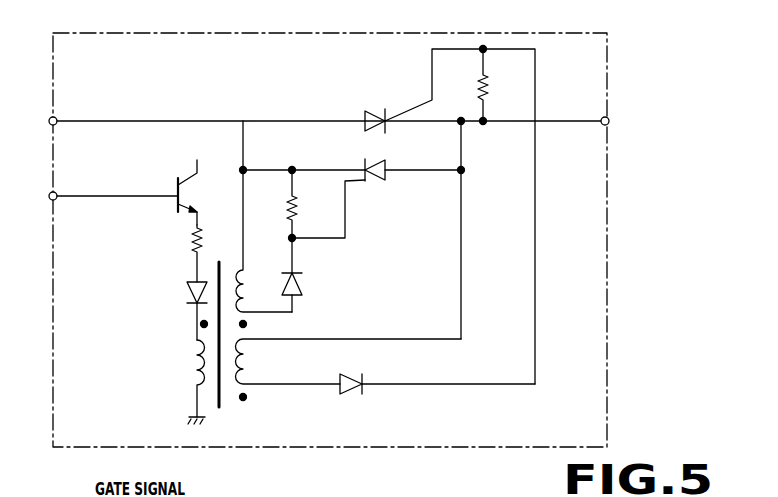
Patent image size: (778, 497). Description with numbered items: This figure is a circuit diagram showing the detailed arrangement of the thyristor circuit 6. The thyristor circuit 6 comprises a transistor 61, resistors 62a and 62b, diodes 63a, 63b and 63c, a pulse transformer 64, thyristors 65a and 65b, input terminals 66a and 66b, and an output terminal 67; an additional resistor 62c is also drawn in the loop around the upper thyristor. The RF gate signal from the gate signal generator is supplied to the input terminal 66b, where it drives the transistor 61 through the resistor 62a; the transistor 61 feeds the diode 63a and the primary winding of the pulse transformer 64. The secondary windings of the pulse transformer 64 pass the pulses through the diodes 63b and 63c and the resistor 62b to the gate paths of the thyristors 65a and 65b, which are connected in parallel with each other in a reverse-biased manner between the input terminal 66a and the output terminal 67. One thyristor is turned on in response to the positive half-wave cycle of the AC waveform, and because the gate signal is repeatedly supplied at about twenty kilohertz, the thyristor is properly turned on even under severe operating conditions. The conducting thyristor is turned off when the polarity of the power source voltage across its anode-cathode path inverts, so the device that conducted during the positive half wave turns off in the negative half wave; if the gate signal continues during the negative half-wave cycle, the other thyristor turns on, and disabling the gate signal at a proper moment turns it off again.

The thyristor circuit 6 is at (220, 34).
The transistor 61 is at (176, 190).
The resistor 62a is at (190, 239).
The resistor 62b is at (287, 203).
The resistor 62c is at (478, 86).
The diode 63a is at (190, 293).
The diode 63b is at (304, 288).
The diode 63c is at (350, 396).
The pulse transformer 64 is at (221, 396).
The thyristor 65a is at (378, 183).
The thyristor 65b is at (383, 117).
The input terminal 66a is at (49, 120).
The input terminal 66b is at (49, 194).
The output terminal 67 is at (607, 117).